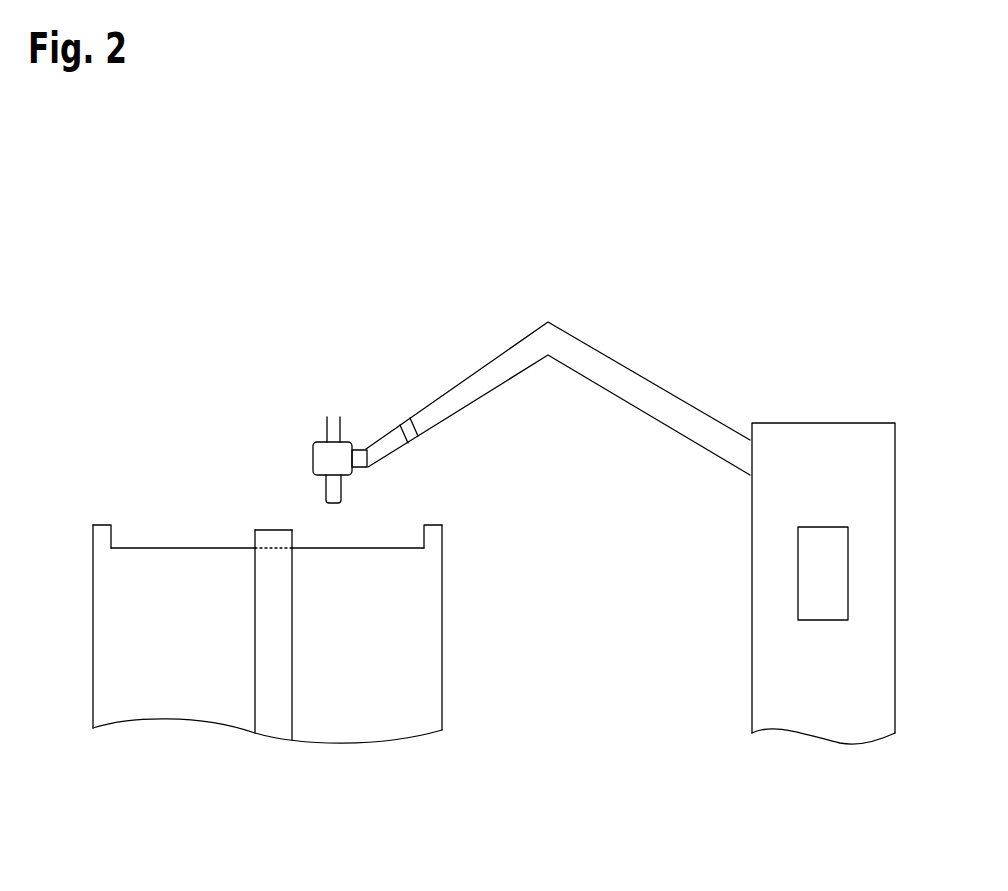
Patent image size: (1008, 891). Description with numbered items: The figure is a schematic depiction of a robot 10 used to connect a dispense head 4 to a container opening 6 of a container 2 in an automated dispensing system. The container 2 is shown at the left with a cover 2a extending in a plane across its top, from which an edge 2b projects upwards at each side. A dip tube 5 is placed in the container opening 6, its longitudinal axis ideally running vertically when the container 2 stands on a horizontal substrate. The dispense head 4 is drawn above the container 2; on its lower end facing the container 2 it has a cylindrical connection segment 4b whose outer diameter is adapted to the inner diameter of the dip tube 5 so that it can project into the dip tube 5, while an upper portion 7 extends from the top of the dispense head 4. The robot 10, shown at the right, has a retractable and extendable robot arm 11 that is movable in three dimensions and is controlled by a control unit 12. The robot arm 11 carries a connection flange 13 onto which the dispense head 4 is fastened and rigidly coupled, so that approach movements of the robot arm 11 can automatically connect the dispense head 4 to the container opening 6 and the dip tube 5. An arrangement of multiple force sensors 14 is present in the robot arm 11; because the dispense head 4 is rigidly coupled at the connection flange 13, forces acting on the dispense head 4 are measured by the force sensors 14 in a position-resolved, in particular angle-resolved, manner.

The container 2 is at (289, 609).
The cover 2a is at (347, 548).
The edge 2b is at (102, 538).
The dispense head 4 is at (314, 417).
The cylindrical connection segment 4b is at (332, 490).
The dip tube 5 is at (282, 626).
The container opening 6 is at (255, 530).
The upper pin of tool 7 is at (333, 417).
The robot 10 is at (859, 472).
The robot arm 11 is at (650, 379).
The control unit 12 is at (839, 583).
The connection flange 13 is at (365, 422).
The force sensors 14 is at (402, 424).